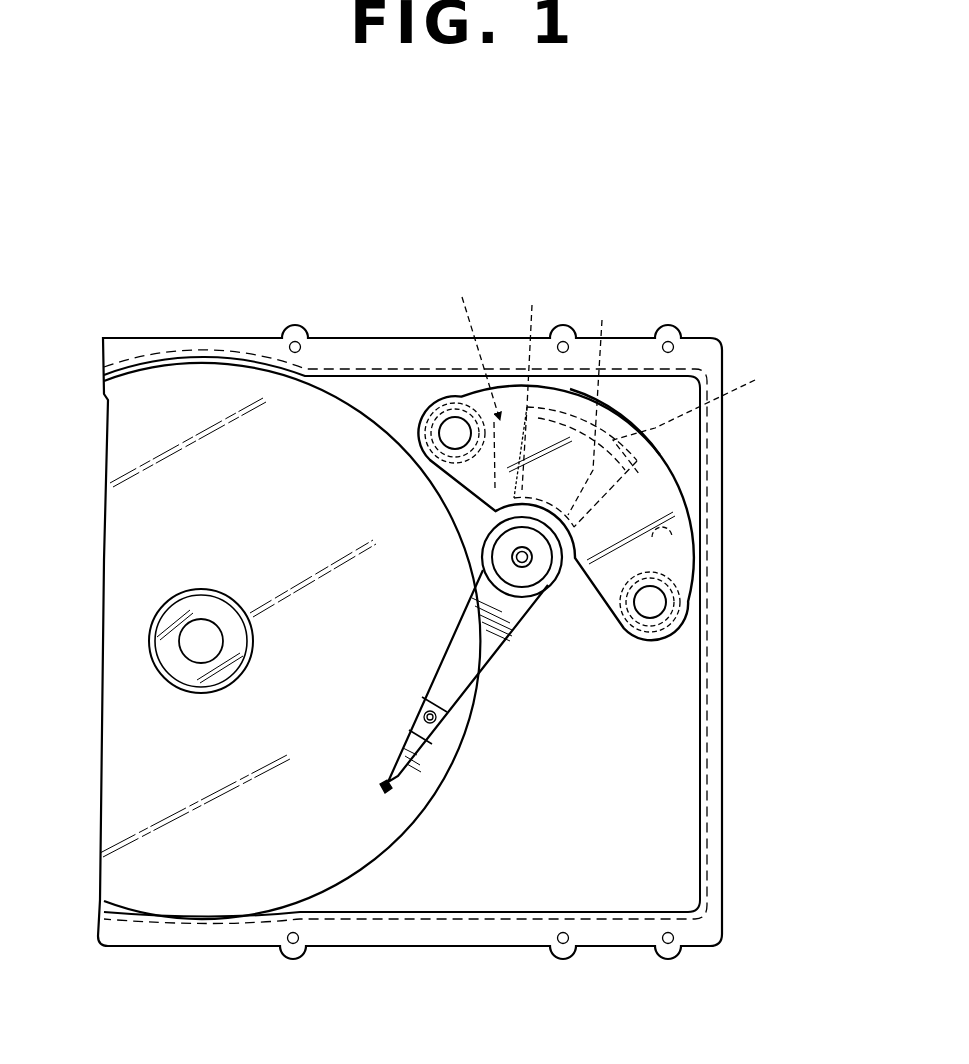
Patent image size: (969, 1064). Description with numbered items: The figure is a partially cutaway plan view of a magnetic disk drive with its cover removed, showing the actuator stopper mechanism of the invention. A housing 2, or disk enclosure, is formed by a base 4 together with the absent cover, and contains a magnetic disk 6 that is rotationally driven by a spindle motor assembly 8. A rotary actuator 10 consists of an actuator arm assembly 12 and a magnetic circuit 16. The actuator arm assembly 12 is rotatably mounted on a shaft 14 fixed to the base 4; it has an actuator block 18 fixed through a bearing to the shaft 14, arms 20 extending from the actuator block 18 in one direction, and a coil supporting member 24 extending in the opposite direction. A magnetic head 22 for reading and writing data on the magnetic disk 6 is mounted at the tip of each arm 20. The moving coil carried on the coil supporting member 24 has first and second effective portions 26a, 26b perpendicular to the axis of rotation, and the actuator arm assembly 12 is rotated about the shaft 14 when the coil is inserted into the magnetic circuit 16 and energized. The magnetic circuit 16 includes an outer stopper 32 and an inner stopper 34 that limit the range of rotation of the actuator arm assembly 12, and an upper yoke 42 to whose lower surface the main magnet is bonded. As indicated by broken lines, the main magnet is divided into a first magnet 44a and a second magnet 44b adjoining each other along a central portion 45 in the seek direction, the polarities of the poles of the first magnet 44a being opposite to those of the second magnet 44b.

The housing 2 is at (198, 332).
The base 4 is at (727, 728).
The magnetic disk 6 is at (383, 872).
The spindle motor assembly 8 is at (199, 600).
The rotary actuator 10 is at (534, 615).
The actuator arm assembly 12 is at (435, 658).
The shaft 14 is at (518, 557).
The magnetic circuit 16 is at (675, 450).
The actuator block 18 is at (548, 587).
The arms 20 is at (463, 690).
The magnetic head 22 is at (380, 787).
The coil supporting member 24 is at (640, 494).
The first effective portion 26a is at (530, 381).
The second effective portion 26b is at (712, 414).
The outer stopper 32 is at (422, 412).
The inner stopper 34 is at (680, 628).
The upper yoke 42 is at (615, 410).
The first magnet 44a is at (465, 376).
The second magnet 44b is at (668, 545).
The central portion 45 is at (592, 401).